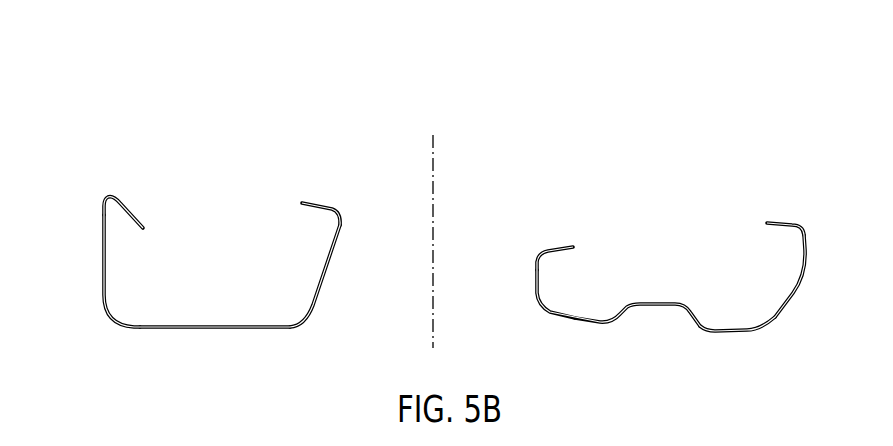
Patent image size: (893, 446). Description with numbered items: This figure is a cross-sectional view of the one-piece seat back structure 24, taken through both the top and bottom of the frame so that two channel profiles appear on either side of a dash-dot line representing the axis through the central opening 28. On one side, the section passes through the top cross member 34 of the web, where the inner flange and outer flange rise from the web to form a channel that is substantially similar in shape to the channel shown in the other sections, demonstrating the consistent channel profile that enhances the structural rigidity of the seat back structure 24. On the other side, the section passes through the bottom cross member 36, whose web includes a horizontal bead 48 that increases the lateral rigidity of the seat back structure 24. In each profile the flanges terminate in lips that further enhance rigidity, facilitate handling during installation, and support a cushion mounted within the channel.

The seat back structure 24 is at (439, 71).
The central opening 28 is at (458, 134).
The top cross member 34 is at (215, 324).
The bottom cross member 36 is at (732, 330).
The horizontal bead 48 is at (660, 304).